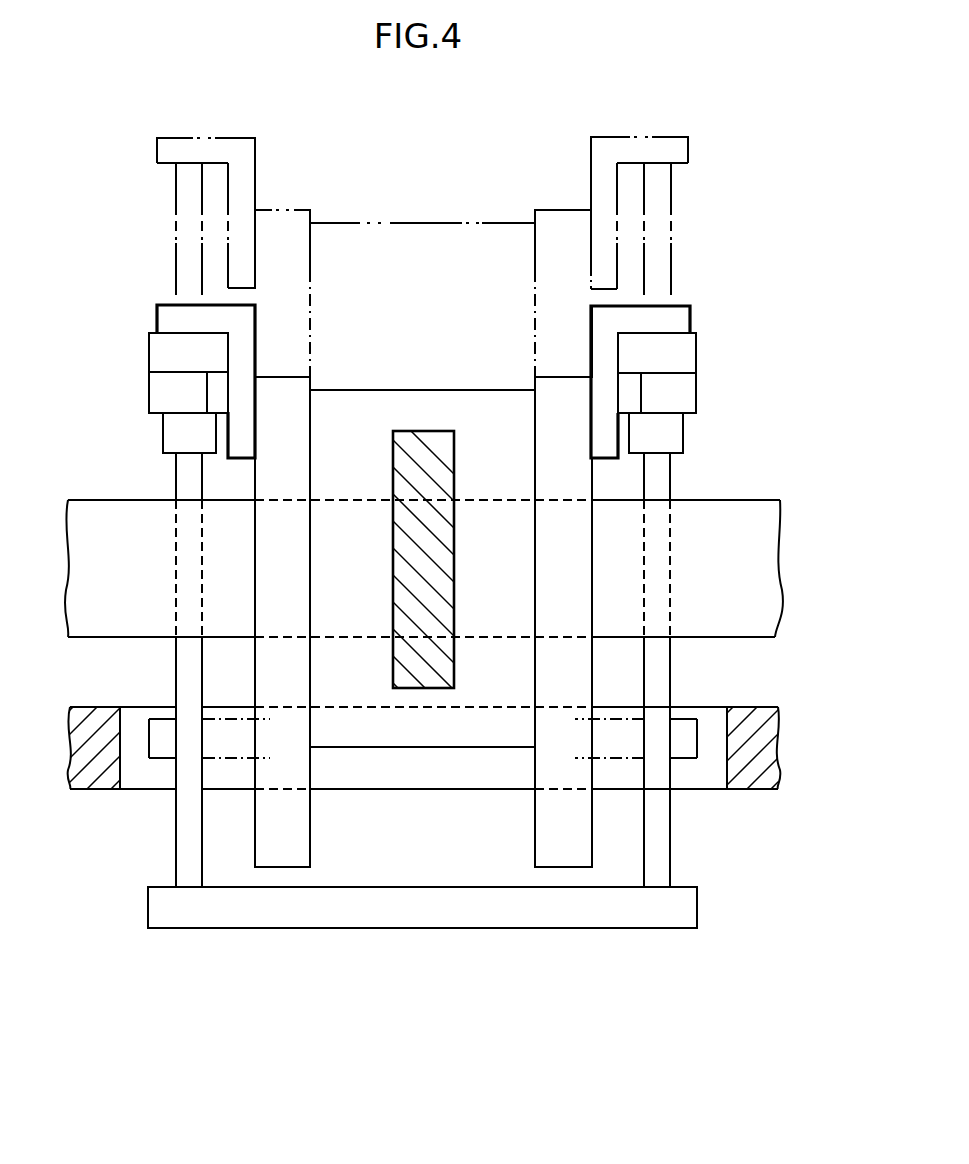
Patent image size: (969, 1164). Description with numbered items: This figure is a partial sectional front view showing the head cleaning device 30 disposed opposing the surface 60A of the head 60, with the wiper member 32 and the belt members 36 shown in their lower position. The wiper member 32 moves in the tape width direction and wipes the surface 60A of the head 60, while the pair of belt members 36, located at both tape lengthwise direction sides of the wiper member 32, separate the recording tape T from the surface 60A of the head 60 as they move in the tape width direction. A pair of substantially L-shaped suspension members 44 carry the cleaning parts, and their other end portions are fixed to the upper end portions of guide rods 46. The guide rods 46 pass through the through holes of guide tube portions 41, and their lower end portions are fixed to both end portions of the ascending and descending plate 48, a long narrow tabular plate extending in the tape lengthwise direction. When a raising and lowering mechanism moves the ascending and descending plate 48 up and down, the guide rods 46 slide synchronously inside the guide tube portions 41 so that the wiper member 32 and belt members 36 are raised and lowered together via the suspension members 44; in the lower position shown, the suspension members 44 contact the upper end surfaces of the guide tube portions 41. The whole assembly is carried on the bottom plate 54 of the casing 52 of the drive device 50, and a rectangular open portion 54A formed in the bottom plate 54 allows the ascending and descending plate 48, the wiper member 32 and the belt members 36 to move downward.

The head cleaning device 30 is at (695, 294).
The wiper member 32 is at (360, 412).
The belt members 36 is at (279, 390).
The guide tube portions 41 is at (166, 391).
The suspension members 44 is at (168, 353).
The guide rods 46 is at (185, 676).
The ascending and descending plate 48 is at (445, 910).
The drive device 50 is at (454, 728).
The casing 52 is at (69, 804).
The bottom plate 54 is at (751, 705).
The open portion 54A is at (121, 773).
The head 60 is at (477, 577).
The surface of the head 60A is at (428, 443).
The recording tape T is at (752, 517).